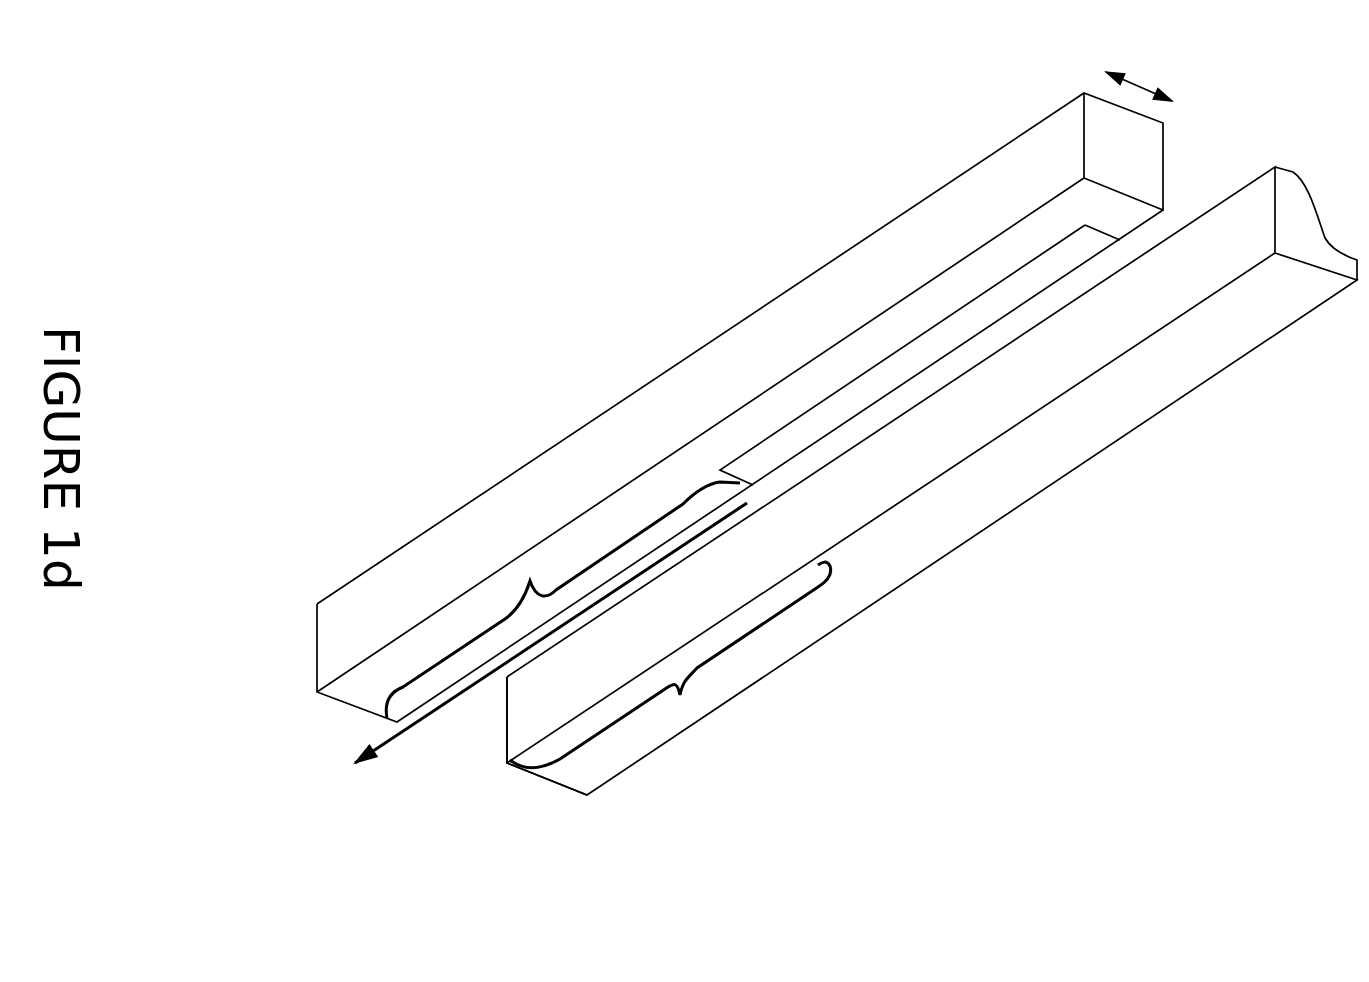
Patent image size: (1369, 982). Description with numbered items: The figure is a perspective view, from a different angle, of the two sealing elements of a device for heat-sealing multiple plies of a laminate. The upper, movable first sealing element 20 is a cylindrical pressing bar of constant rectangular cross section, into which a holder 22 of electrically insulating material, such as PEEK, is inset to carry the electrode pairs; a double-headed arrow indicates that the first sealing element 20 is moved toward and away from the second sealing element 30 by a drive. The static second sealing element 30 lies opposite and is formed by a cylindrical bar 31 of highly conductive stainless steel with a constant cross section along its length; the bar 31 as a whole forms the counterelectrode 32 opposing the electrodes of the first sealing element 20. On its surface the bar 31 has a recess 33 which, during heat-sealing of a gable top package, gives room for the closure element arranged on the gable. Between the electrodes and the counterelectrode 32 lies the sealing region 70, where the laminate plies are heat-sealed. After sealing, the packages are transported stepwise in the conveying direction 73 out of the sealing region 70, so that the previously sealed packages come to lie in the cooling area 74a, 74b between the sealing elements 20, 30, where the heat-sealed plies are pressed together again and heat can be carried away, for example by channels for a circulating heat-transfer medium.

The first sealing element 20 is at (452, 630).
The holder 22 is at (857, 392).
The second sealing element 30 is at (837, 672).
The cylindrical bar 31 is at (548, 694).
The counterelectrode 32 is at (856, 489).
The recess 33 is at (1327, 225).
The sealing region 70 is at (1063, 291).
The conveying direction 73 is at (390, 741).
The cooling area 74a is at (523, 570).
The cooling area 74b is at (687, 703).